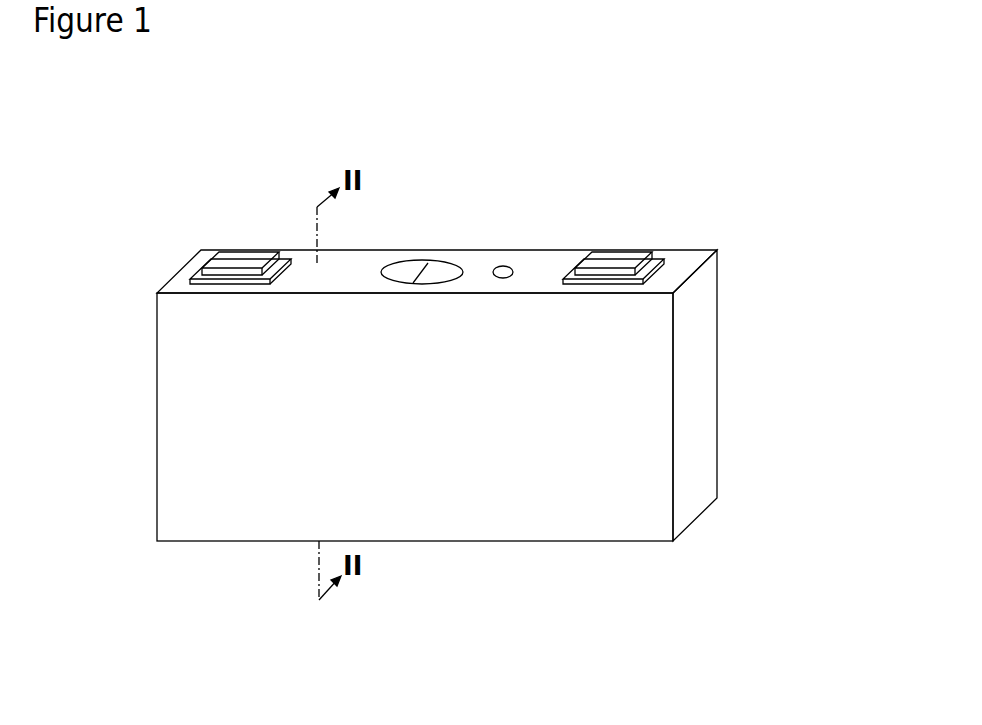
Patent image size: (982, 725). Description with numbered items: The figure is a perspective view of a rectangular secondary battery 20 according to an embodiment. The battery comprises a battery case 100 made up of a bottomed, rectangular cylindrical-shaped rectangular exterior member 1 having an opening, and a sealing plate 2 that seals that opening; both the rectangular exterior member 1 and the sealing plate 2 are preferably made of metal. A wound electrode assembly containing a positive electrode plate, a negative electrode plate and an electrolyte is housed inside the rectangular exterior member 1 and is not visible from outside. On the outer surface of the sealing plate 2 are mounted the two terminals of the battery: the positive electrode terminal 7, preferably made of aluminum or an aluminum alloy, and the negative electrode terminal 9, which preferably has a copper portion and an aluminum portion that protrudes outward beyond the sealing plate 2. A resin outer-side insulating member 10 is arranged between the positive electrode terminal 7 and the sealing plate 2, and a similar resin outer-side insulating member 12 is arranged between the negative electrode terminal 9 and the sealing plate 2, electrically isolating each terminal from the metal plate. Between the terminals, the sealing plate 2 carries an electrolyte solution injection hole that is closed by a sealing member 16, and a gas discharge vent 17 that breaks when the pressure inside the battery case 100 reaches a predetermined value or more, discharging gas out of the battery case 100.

The battery case 100 is at (822, 188).
The rectangular exterior member 1 is at (703, 328).
The sealing plate 2 is at (680, 260).
The rectangular secondary battery 20 is at (184, 123).
The outer-side insulating member 12 is at (209, 258).
The negative electrode terminal 9 is at (248, 265).
The outer-side insulating member 10 is at (578, 268).
The positive electrode terminal 7 is at (627, 263).
The gas discharge vent 17 is at (432, 268).
The sealing member 16 is at (508, 266).